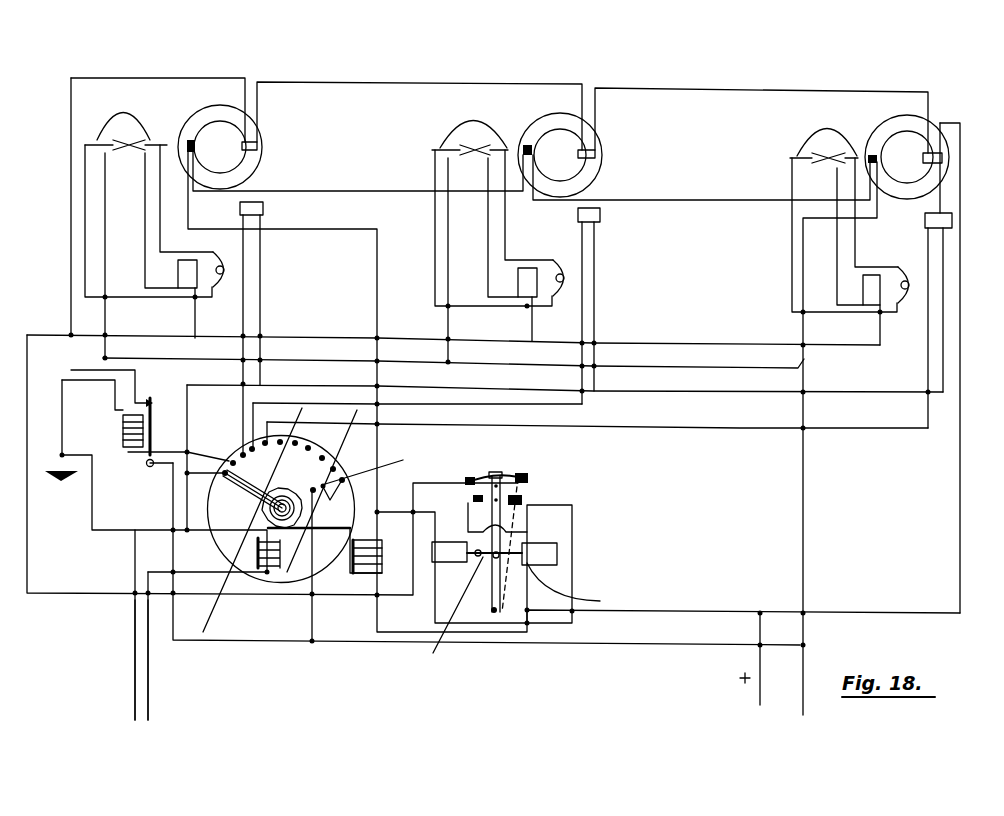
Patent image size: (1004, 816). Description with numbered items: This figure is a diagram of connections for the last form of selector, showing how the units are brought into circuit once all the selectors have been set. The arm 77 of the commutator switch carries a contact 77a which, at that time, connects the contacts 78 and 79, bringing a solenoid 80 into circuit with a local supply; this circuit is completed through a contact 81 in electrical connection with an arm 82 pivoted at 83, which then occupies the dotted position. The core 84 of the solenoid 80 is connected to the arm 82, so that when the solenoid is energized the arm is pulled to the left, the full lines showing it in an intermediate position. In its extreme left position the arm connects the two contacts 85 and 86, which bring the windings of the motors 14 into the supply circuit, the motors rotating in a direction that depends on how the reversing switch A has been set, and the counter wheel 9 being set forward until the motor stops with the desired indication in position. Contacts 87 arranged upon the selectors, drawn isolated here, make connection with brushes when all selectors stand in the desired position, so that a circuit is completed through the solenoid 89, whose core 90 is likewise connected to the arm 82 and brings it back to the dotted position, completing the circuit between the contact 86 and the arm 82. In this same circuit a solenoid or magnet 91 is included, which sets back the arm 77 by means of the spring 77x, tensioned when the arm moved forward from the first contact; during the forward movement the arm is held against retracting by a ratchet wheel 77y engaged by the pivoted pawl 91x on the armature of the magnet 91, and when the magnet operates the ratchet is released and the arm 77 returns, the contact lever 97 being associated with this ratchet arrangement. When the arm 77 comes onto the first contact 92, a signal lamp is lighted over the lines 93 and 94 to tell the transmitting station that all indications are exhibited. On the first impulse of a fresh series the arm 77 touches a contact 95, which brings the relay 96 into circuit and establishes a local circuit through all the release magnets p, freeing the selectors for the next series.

The signal lamp 9 is at (215, 105).
The contacts 87 is at (560, 152).
The release magnets p is at (257, 146).
The switch A is at (471, 127).
The motors 14 is at (224, 271).
The relay 96 is at (123, 424).
The contact 95 is at (232, 460).
The contact 77a is at (270, 438).
The first contact 92 is at (226, 478).
The ratchet wheel 77y is at (276, 492).
The spring 77x is at (290, 497).
The arm 77 is at (252, 520).
The contact 78 is at (323, 486).
The contact 79 is at (345, 478).
The contact lever 97 is at (375, 466).
The pivoted pawl 91x is at (338, 530).
The solenoid or magnet 91 is at (367, 572).
The line 93 is at (135, 668).
The line 94 is at (148, 670).
The pivot 83 is at (497, 613).
The arm 82 is at (503, 598).
The contact 85 is at (471, 478).
The contact 86 is at (473, 499).
The contact 81 is at (522, 500).
The solenoid 80 is at (452, 557).
The solenoid 89 is at (548, 558).
The core 90 is at (575, 587).
The core 84 is at (453, 612).